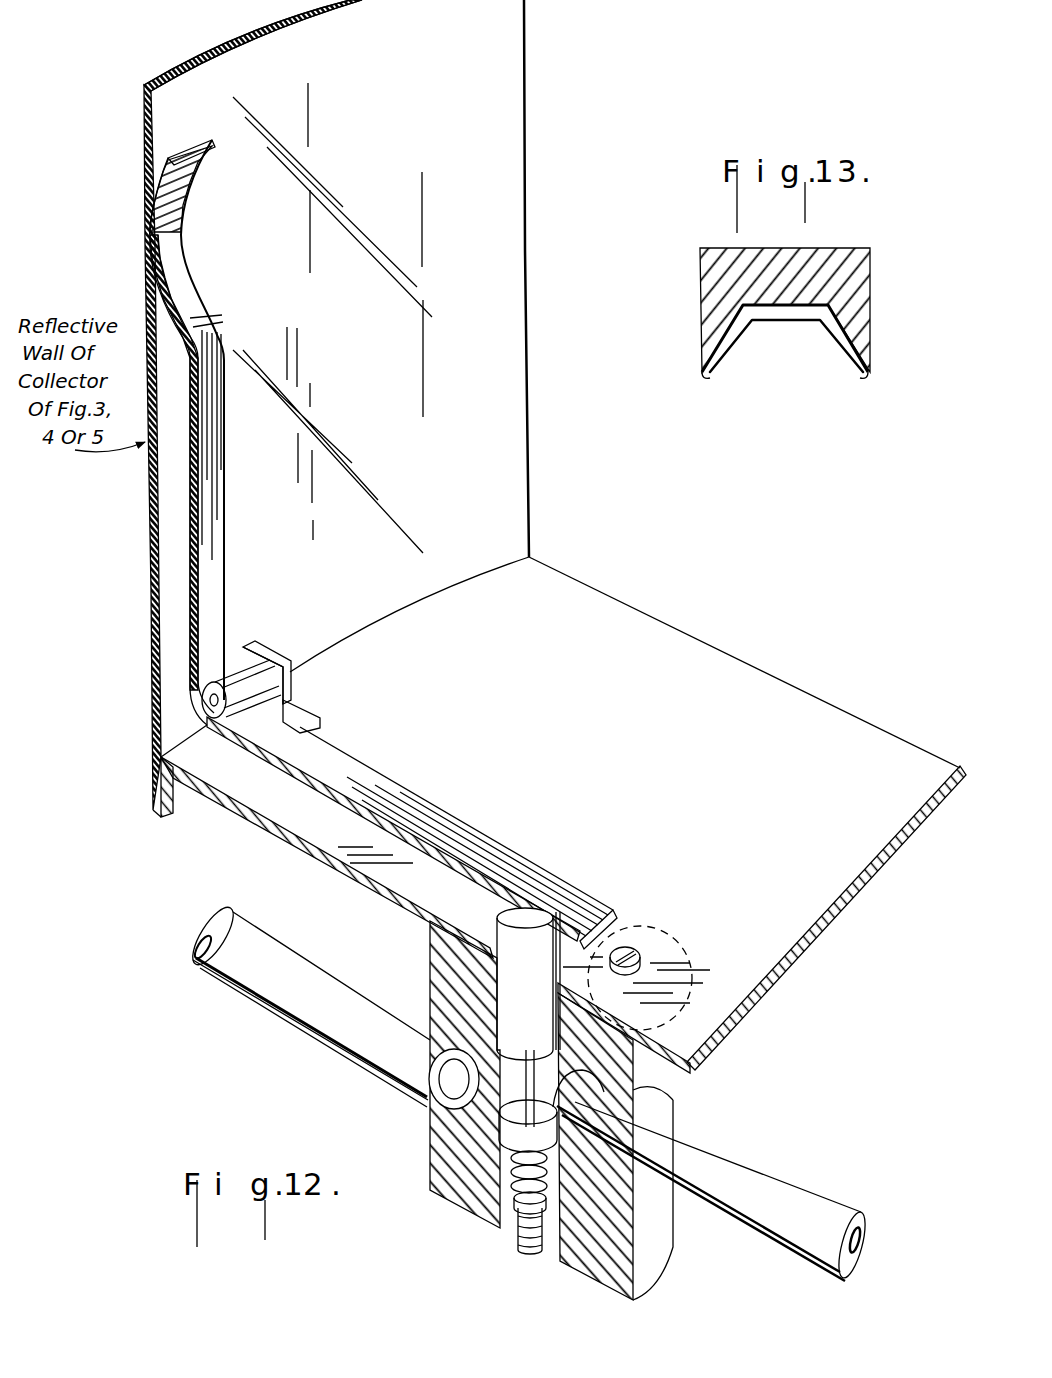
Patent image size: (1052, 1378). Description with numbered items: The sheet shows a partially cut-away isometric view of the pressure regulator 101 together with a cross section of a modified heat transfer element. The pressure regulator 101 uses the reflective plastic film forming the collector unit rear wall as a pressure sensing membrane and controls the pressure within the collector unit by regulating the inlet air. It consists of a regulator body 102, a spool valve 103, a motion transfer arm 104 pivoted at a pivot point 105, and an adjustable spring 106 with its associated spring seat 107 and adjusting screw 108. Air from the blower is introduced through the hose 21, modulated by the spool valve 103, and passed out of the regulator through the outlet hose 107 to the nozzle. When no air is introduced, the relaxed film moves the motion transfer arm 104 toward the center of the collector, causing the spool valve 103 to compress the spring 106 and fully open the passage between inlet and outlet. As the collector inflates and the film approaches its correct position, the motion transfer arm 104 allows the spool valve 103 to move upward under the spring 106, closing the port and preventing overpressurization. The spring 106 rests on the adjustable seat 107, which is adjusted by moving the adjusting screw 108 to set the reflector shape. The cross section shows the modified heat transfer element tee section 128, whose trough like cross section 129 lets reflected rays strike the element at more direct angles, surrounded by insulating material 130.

In FIG. 12, the hose 21 is at (313, 965).
In FIG. 12, the pressure regulator 101 is at (608, 1104).
In FIG. 12, the regulator body 102 is at (430, 1154).
In FIG. 12, the spool valve 103 is at (541, 997).
In FIG. 12, the motion transfer arm 104 is at (517, 870).
In FIG. 12, the pivot point 105 is at (293, 697).
In FIG. 12, the adjustable spring 106 is at (510, 1170).
In FIG. 12, the spring seat 107 is at (512, 1199).
In FIG. 12, the adjusting screw 108 is at (517, 1238).
In FIG. 13, the heat transfer element tee section 128 is at (742, 386).
In FIG. 13, the trough like cross section 129 is at (800, 322).
In FIG. 13, the insulating material 130 is at (700, 293).